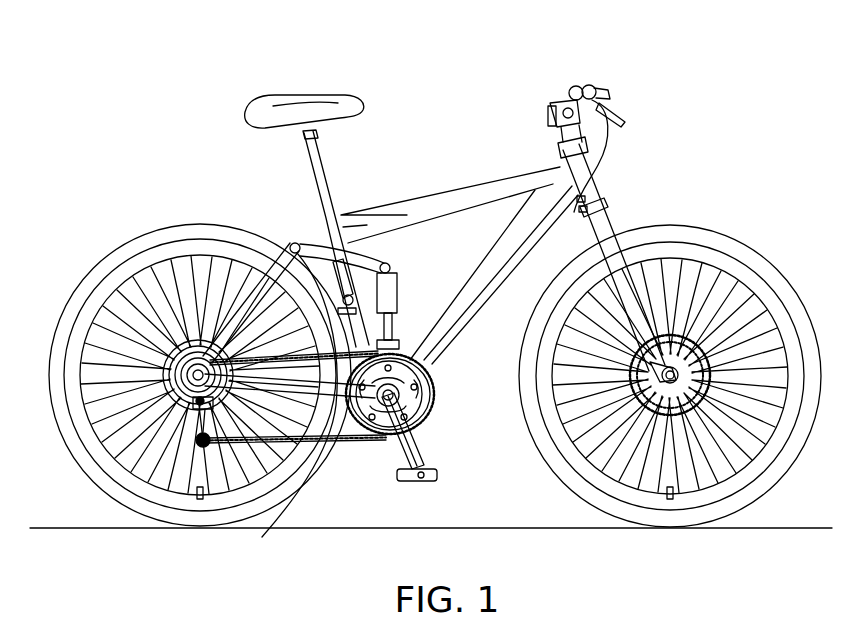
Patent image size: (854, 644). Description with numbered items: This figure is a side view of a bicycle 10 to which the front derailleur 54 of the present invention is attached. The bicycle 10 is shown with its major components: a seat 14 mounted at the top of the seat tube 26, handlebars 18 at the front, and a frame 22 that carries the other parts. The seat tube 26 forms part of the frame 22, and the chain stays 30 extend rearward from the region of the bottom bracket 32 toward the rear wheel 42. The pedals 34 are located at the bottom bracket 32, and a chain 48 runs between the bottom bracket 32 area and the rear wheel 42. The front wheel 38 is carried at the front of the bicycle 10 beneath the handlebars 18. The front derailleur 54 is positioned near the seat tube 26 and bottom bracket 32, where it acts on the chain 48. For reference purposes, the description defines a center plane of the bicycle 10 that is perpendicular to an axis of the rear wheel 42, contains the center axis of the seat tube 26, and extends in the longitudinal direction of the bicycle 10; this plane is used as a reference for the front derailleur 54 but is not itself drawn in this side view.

The bicycle 10 is at (160, 133).
The seat 14 is at (273, 107).
The handlebars 18 is at (575, 88).
The frame 22 is at (490, 205).
The seat tube 26 is at (345, 263).
The chain stays 30 is at (262, 537).
The bottom bracket 32 is at (423, 382).
The pedals 34 is at (432, 470).
The front wheel 38 is at (690, 225).
The rear wheel 42 is at (177, 237).
The chain 48 is at (366, 447).
The front derailleur 54 is at (397, 345).